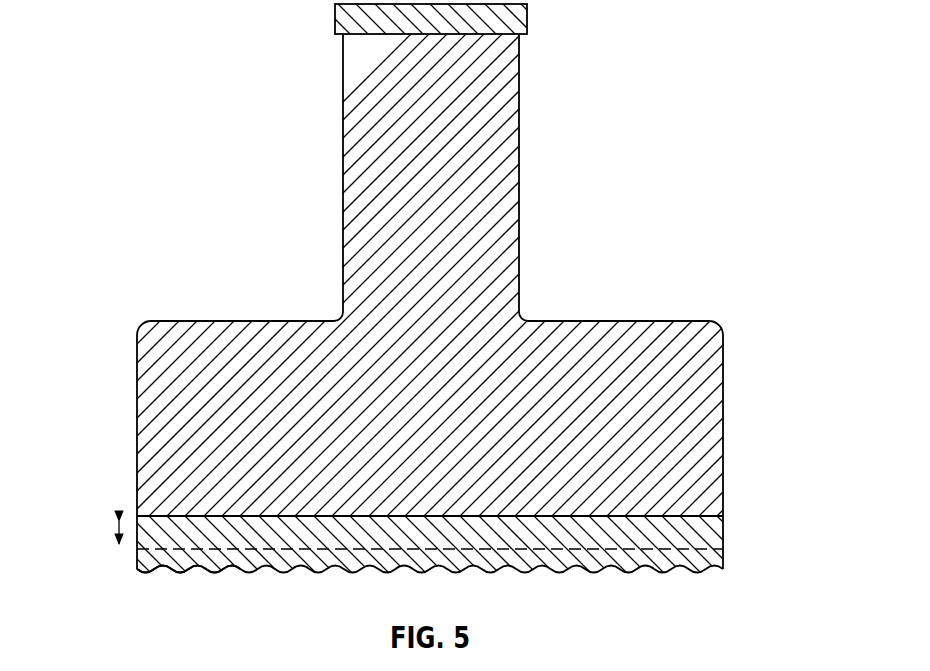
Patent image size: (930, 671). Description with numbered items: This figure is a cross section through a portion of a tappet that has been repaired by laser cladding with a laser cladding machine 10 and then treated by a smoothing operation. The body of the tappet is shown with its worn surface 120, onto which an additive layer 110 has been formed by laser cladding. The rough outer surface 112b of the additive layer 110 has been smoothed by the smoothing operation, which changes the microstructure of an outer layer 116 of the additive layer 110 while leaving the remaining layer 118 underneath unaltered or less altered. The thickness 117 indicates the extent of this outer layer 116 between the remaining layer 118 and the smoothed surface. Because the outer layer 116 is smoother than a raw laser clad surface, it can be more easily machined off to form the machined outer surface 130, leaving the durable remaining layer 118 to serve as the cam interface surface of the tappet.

The laser cladding machine 10 is at (162, 30).
The additive layer 110 is at (723, 535).
The rough outer surface 112b is at (184, 574).
The outer layer 116 is at (146, 557).
The layer thickness 117 is at (116, 531).
The remaining layer 118 is at (146, 522).
The worn surface 120 is at (305, 522).
The machined outer surface 130 is at (572, 552).